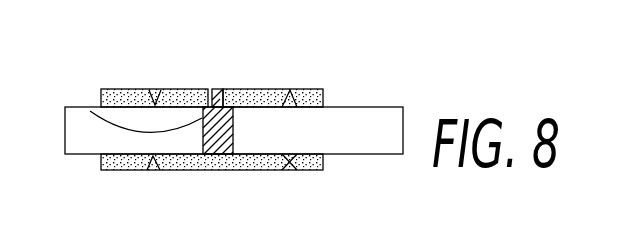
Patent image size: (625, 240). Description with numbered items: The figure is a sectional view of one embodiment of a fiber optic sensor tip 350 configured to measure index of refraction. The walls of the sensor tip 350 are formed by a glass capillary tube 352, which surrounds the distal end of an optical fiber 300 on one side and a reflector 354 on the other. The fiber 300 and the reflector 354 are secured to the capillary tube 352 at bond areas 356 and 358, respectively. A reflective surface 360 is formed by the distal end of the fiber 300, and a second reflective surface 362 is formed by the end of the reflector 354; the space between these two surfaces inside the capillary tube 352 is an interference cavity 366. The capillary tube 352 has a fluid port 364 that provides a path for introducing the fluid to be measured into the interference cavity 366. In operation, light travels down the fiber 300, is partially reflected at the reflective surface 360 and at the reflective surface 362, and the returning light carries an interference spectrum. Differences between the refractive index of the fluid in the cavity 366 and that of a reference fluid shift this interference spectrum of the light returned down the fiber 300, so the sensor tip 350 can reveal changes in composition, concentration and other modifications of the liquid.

The optical fiber 300 is at (332, 113).
The sensor tip 350 is at (180, 88).
The glass capillary tube 352 is at (137, 157).
The reflector 354 is at (82, 138).
The bond area 356 is at (288, 160).
The bond area 358 is at (156, 104).
The reflective surface 360 is at (241, 115).
The reflective surface 362 is at (101, 117).
The fluid port 364 is at (208, 104).
The interference cavity 366 is at (230, 137).